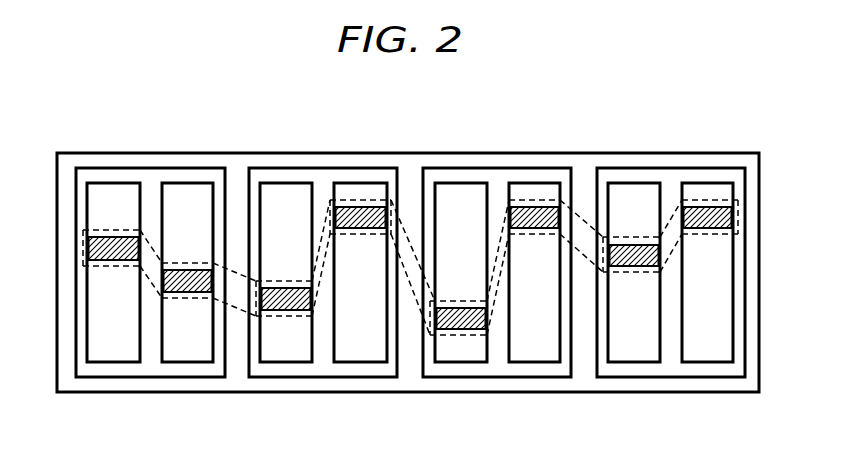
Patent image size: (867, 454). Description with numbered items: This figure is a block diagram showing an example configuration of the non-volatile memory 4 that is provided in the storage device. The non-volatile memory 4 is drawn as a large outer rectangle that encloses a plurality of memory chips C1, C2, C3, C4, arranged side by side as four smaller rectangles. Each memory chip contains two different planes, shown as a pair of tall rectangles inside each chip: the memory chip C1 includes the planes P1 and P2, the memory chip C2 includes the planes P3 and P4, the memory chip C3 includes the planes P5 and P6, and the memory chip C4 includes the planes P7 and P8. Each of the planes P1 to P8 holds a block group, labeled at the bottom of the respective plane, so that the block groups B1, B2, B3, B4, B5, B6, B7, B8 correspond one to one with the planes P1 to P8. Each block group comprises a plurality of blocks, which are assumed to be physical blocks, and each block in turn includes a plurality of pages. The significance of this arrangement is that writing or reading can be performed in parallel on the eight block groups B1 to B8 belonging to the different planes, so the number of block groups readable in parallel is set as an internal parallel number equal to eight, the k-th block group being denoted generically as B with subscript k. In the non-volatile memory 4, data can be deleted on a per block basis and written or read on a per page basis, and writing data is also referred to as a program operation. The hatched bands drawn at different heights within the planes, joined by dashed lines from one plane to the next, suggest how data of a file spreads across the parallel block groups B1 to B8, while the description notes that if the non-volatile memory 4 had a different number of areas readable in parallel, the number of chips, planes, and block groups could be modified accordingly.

The non-volatile memory 4 is at (57, 200).
The memory chip C1 is at (147, 168).
The memory chip C2 is at (320, 168).
The memory chip C3 is at (494, 168).
The memory chip C4 is at (667, 168).
The plane P1 is at (104, 183).
The plane P2 is at (200, 183).
The plane P3 is at (278, 183).
The plane P4 is at (373, 183).
The plane P5 is at (452, 183).
The plane P6 is at (547, 183).
The plane P7 is at (625, 183).
The plane P8 is at (722, 183).
The block group B1 is at (112, 358).
The block group B2 is at (186, 358).
The block group B3 is at (285, 358).
The block group B4 is at (360, 358).
The block group B5 is at (460, 358).
The block group B6 is at (534, 358).
The block group B7 is at (634, 358).
The block group B8 is at (708, 358).